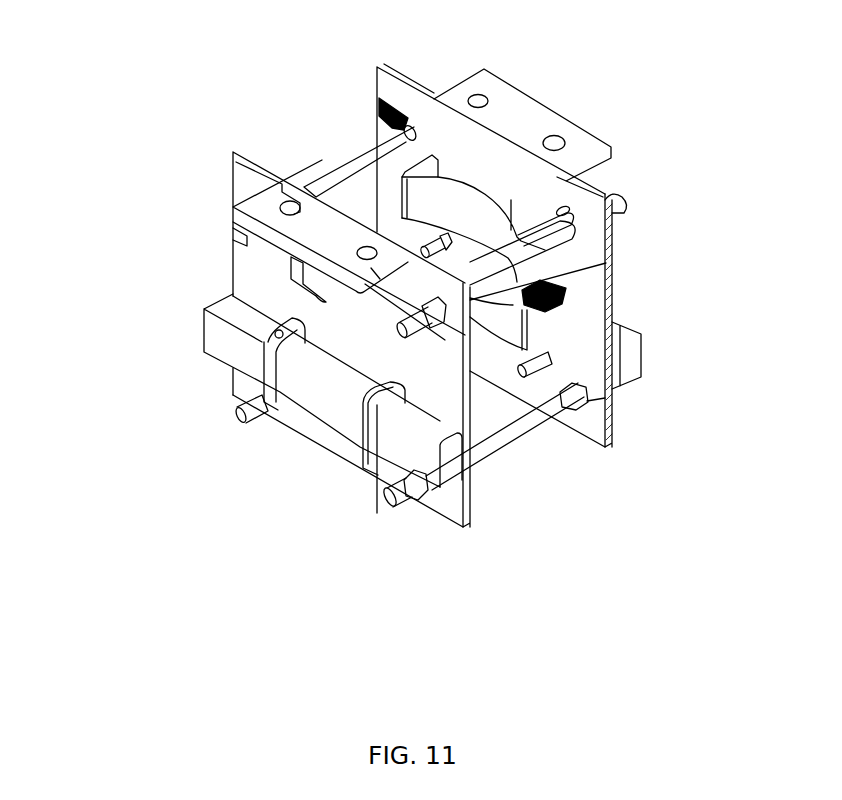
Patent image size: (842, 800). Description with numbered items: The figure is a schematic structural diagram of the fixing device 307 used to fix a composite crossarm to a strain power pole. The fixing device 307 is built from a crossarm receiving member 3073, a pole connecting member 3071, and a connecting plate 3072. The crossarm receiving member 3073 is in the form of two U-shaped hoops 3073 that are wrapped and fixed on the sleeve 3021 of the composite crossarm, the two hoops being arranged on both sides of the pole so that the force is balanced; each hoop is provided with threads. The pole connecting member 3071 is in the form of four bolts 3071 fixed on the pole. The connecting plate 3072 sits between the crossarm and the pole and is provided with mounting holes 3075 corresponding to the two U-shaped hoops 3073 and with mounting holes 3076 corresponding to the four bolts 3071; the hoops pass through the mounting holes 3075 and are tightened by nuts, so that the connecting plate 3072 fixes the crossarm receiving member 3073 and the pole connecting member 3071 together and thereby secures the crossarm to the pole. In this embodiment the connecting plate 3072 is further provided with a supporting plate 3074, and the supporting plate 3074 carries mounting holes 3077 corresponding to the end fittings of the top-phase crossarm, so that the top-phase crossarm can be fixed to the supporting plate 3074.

The sleeve 3021 is at (237, 335).
The fixing device 307 is at (708, 413).
The pole connecting member 3071 is at (517, 437).
The connecting plate 3072 is at (452, 510).
The crossarm receiving member 3073 is at (377, 513).
The supporting plate 3074 is at (612, 413).
The mounting holes 3075 is at (608, 262).
The mounting holes 3076 is at (378, 98).
The mounting holes 3077 is at (290, 182).